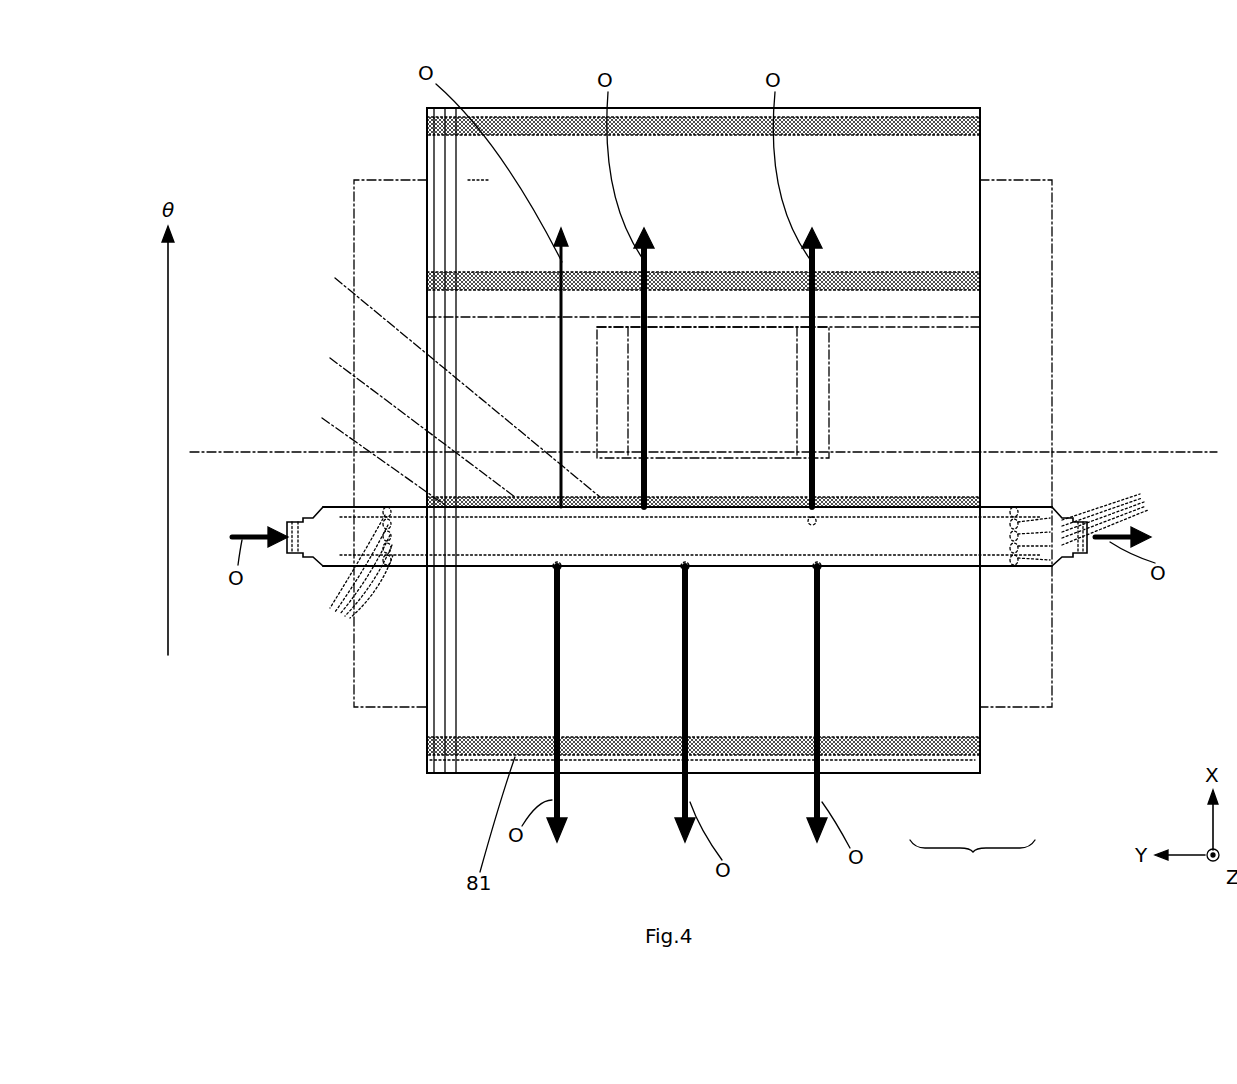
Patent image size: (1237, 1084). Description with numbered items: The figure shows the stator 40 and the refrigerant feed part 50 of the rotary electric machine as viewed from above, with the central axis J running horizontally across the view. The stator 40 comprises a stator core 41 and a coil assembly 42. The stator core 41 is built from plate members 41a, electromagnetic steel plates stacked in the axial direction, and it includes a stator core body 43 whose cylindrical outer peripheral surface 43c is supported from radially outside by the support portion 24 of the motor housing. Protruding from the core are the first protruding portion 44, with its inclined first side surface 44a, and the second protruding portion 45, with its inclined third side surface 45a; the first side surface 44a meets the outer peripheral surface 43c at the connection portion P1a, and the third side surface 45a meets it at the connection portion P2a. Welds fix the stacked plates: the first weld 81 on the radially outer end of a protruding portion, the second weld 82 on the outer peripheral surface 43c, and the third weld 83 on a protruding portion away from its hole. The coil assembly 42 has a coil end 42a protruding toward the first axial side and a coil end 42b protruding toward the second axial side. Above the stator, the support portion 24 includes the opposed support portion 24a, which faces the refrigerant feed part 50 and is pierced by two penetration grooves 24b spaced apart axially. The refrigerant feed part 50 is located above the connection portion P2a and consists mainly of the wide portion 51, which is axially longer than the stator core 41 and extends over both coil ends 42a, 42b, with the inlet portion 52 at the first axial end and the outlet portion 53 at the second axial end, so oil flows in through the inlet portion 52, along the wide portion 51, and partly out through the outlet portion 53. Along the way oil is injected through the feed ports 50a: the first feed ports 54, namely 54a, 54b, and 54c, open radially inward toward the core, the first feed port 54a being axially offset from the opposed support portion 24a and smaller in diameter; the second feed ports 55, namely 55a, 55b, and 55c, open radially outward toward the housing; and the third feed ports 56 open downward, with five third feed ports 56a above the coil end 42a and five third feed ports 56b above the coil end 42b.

The support portion 24 is at (903, 322).
The opposed support portion 24a is at (905, 325).
The penetration groove 24b is at (655, 330).
The stator 40 is at (1133, 172).
The stator core 41 is at (1013, 750).
The plate members 41a is at (456, 180).
The coil assembly 42 is at (1065, 664).
The coil end 42a is at (352, 662).
The coil end 42b is at (1053, 612).
The stator core body 43 is at (988, 412).
The outer peripheral surface 43c is at (963, 410).
The first protruding portion 44 is at (988, 116).
The first side surface 44a is at (564, 185).
The second protruding portion 45 is at (463, 758).
The third side surface 45a is at (622, 690).
The refrigerant feed part 50 is at (1065, 505).
The feed port 50a is at (972, 858).
The wide portion 51 is at (440, 632).
The inlet portion 52 is at (303, 516).
The outlet portion 53 is at (1078, 557).
The first feed port 54 is at (968, 812).
The first feed port 54a is at (399, 419).
The first feed port 54b is at (445, 379).
The first feed port 54c is at (812, 520).
The second feed port 55 is at (530, 560).
The second feed port 55a is at (560, 570).
The second feed port 55b is at (688, 570).
The second feed port 55c is at (822, 572).
The third feed port 56 is at (386, 572).
The third feed port 56a is at (330, 612).
The third feed port 56b is at (1125, 515).
The first weld 81 is at (946, 117).
The second weld 82 is at (960, 497).
The third weld 83 is at (870, 275).
The connection portion P1a is at (950, 305).
The connection portion P2a is at (445, 595).
The central axis J is at (215, 450).